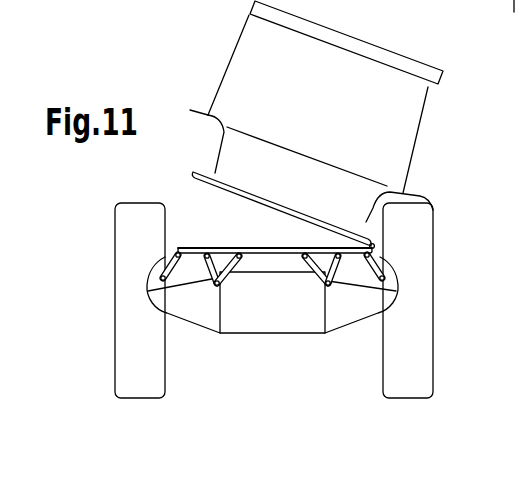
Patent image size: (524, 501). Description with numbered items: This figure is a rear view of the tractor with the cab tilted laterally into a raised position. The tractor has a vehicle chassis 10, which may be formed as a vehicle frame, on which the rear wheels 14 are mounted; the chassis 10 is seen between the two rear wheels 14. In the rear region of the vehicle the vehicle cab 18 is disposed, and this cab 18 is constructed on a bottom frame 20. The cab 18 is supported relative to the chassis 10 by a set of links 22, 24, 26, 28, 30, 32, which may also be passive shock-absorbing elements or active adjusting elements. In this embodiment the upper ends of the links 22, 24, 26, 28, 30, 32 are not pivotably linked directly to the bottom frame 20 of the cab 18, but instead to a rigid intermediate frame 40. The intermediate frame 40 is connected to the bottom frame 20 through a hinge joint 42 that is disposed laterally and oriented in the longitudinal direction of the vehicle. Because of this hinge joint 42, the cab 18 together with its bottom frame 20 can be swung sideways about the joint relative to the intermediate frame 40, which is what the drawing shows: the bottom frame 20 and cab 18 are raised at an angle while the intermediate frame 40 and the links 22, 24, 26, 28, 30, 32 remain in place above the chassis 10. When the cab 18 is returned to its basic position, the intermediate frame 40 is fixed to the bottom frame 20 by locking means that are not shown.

The vehicle chassis 10 is at (279, 321).
The rear wheels 14 is at (124, 377).
The vehicle cab 18 is at (413, 98).
The bottom frame 20 is at (263, 200).
The link 22 is at (238, 259).
The link 24 is at (165, 254).
The link 26 is at (204, 271).
The link 28 is at (305, 259).
The link 30 is at (383, 258).
The link 32 is at (340, 280).
The intermediate frame 40 is at (242, 248).
The hinge joint 42 is at (378, 243).